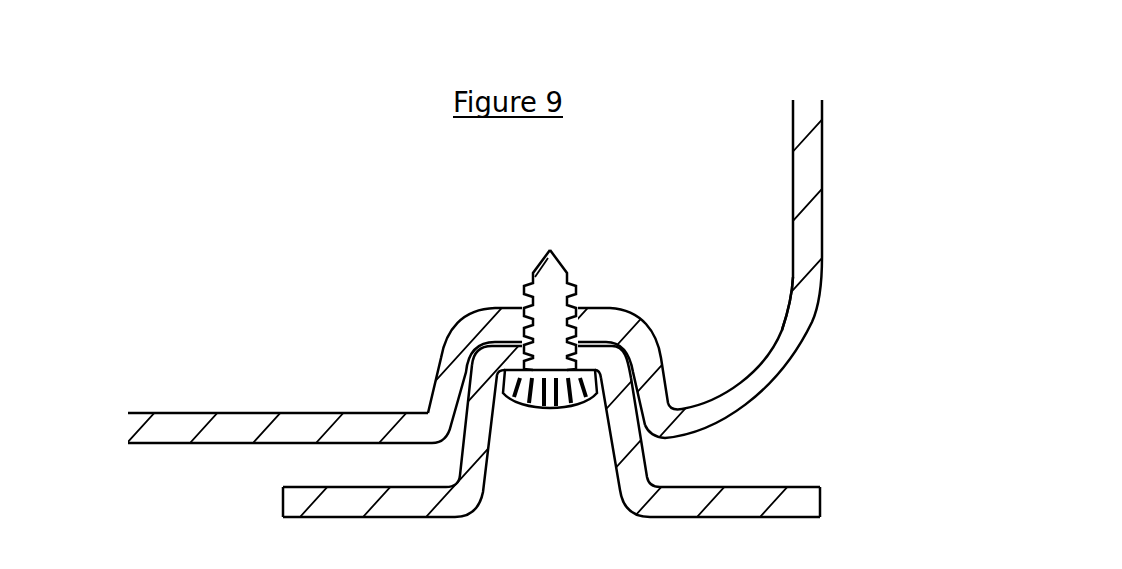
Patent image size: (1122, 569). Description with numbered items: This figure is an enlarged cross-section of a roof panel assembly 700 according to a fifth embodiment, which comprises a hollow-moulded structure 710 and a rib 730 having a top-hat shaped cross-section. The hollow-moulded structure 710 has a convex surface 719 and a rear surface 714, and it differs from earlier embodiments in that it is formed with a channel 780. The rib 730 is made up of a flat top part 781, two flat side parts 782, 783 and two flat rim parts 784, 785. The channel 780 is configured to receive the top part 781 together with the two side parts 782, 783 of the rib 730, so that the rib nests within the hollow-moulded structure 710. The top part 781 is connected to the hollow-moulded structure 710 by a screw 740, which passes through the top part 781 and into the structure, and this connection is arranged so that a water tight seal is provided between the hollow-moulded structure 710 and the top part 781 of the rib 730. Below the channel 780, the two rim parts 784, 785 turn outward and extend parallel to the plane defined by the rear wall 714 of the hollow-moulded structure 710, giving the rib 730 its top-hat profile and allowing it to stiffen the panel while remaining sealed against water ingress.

The fastening assembly 700 is at (777, 50).
The hollow-moulded structure 710 is at (807, 170).
The rear surface 714 is at (165, 423).
The convex surface 719 is at (776, 370).
The rib 730 is at (800, 489).
The screw 740 is at (553, 292).
The channel 780 is at (636, 329).
The top part 781 is at (502, 360).
The side part 782 is at (640, 443).
The side part 783 is at (470, 462).
The rim part 784 is at (807, 503).
The rim part 785 is at (310, 497).